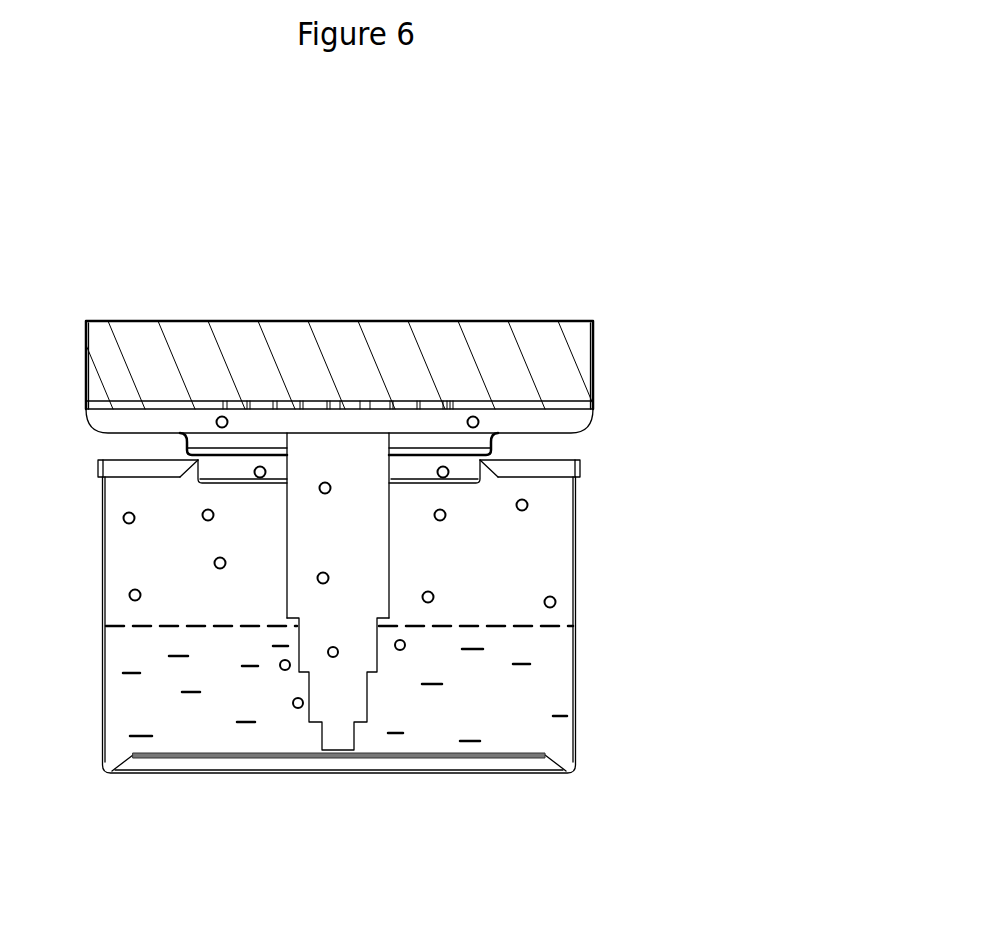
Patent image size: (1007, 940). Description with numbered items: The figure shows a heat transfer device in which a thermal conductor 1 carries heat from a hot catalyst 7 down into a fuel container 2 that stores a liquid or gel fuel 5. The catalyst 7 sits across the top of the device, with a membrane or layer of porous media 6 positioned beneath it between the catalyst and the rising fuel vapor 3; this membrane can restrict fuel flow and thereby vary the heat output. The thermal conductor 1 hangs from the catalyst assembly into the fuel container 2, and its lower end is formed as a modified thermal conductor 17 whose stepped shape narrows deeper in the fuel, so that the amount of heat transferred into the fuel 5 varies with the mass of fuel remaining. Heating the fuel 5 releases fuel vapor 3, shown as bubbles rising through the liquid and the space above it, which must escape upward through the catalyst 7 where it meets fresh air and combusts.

The catalyst 7 is at (493, 321).
The porous media 6 is at (523, 417).
The thermal conductor 1 is at (391, 576).
The modified thermal conductor 17 is at (371, 697).
The fuel container 2 is at (260, 776).
The liquid or gel fuel 5 is at (537, 665).
The fuel vapor 3 is at (217, 572).